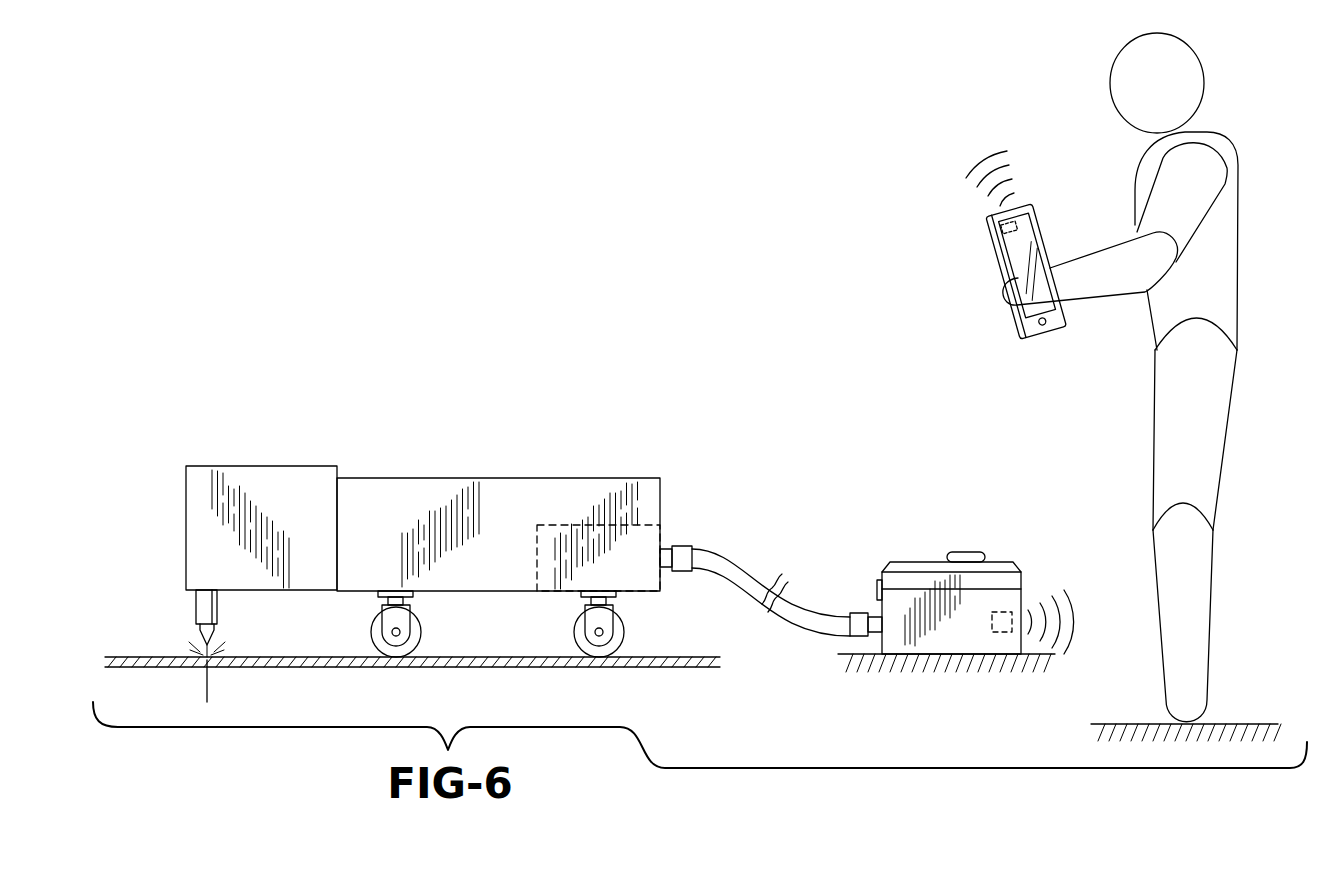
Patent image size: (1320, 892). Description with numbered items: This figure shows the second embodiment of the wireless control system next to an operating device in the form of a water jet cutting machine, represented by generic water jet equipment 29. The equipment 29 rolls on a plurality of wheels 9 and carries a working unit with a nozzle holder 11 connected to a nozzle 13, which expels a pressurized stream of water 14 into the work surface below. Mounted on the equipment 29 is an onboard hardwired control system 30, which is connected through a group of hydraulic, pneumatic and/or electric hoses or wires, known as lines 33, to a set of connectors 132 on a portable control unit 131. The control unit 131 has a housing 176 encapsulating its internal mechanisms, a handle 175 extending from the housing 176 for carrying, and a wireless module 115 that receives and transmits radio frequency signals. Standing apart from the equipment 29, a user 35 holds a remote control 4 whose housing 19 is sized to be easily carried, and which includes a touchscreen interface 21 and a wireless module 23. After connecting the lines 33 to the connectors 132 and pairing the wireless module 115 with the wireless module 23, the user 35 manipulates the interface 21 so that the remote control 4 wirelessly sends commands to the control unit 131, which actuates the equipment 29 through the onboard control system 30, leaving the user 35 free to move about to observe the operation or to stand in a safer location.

The generic water jet equipment 29 is at (385, 480).
The onboard hardwired control system 30 is at (560, 527).
The nozzle holder 11 is at (196, 611).
The nozzle 13 is at (204, 636).
The pressurized stream of water 14 is at (206, 690).
The wheels 9 is at (373, 629).
The lines 33 is at (762, 570).
The connectors 132 is at (868, 612).
The portable control unit 131 is at (914, 563).
The housing 176 is at (1021, 569).
The handle 175 is at (970, 551).
The wireless module 115 is at (1002, 634).
The user 35 is at (1225, 134).
The remote control 4 is at (994, 245).
The interface 21 is at (1027, 265).
The wireless module 23 is at (1009, 227).
The housing 19 is at (1042, 321).